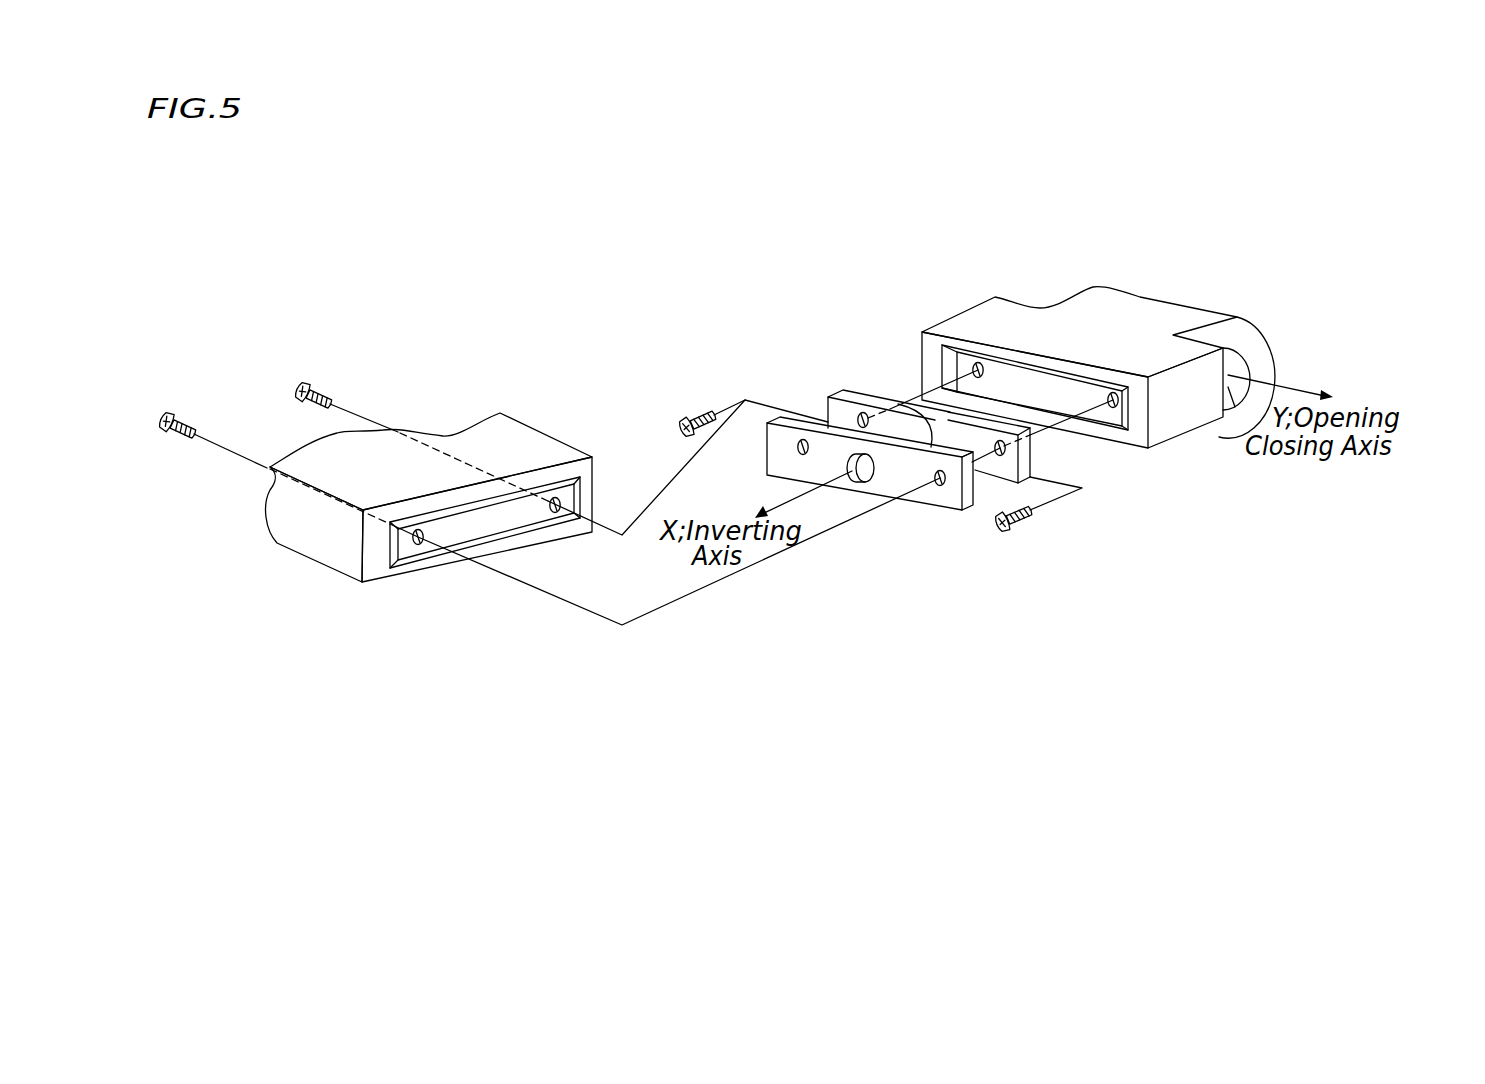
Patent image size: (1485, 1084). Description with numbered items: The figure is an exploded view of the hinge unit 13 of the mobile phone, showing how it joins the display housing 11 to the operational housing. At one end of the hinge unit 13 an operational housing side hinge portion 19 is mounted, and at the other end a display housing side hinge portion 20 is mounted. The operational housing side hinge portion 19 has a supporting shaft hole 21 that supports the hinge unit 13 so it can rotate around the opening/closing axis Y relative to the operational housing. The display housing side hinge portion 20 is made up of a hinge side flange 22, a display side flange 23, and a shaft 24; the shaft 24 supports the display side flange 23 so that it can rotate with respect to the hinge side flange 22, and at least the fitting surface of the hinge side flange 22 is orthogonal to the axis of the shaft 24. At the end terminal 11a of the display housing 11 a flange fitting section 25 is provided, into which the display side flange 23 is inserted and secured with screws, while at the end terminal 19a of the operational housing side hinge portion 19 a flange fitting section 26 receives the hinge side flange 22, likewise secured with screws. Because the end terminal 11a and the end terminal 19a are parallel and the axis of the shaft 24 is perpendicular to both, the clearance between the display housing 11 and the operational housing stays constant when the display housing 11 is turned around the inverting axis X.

The display housing 11 is at (510, 445).
The end terminal 11a is at (381, 555).
The hinge unit 13 is at (768, 294).
The operational housing side hinge portion 19 is at (1158, 300).
The end terminal 19a is at (1138, 433).
The display housing side hinge portion 20 is at (947, 527).
The supporting shaft hole 21 is at (1236, 388).
The hinge side flange 22 is at (993, 483).
The display side flange 23 is at (905, 508).
The shaft 24 is at (914, 437).
The flange fitting section 25 is at (487, 515).
The flange fitting section 26 is at (1034, 382).